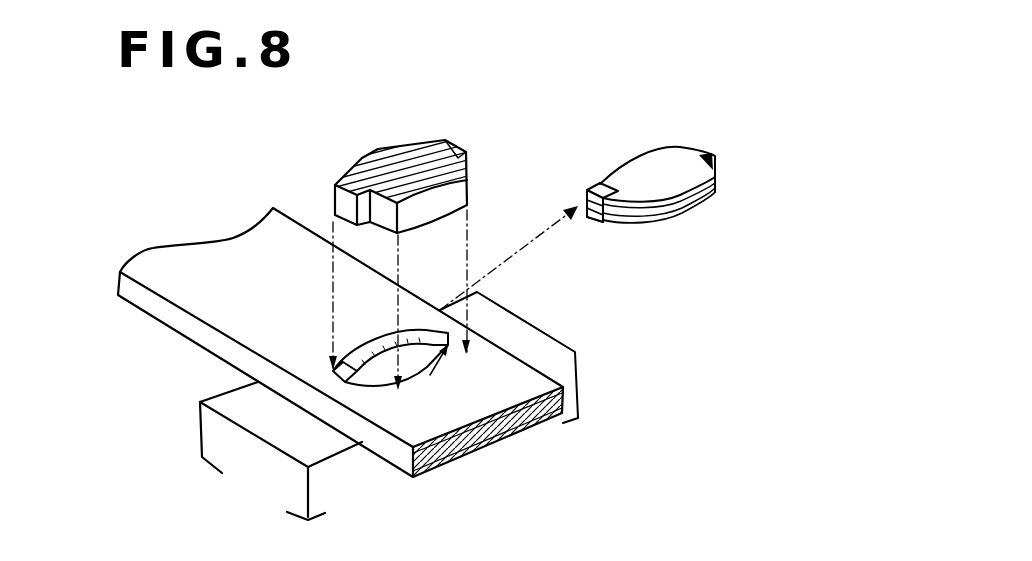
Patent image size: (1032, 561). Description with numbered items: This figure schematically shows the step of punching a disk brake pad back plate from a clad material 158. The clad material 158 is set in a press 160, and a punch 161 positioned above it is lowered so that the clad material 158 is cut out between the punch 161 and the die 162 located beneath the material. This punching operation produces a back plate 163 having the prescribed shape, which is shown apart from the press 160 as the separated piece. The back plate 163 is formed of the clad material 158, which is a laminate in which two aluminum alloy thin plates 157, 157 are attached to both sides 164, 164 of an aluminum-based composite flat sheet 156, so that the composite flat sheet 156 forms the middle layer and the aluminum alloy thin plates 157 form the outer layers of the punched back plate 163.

The aluminum-based composite flat sheet 156 is at (702, 188).
The aluminum alloy thin plate 157 is at (684, 160).
The clad material 158 is at (535, 179).
The press 160 is at (156, 345).
The punch 161 is at (397, 147).
The die 162 is at (213, 438).
The back plate 163 is at (668, 179).
The side of the composite flat sheet 164 is at (618, 191).